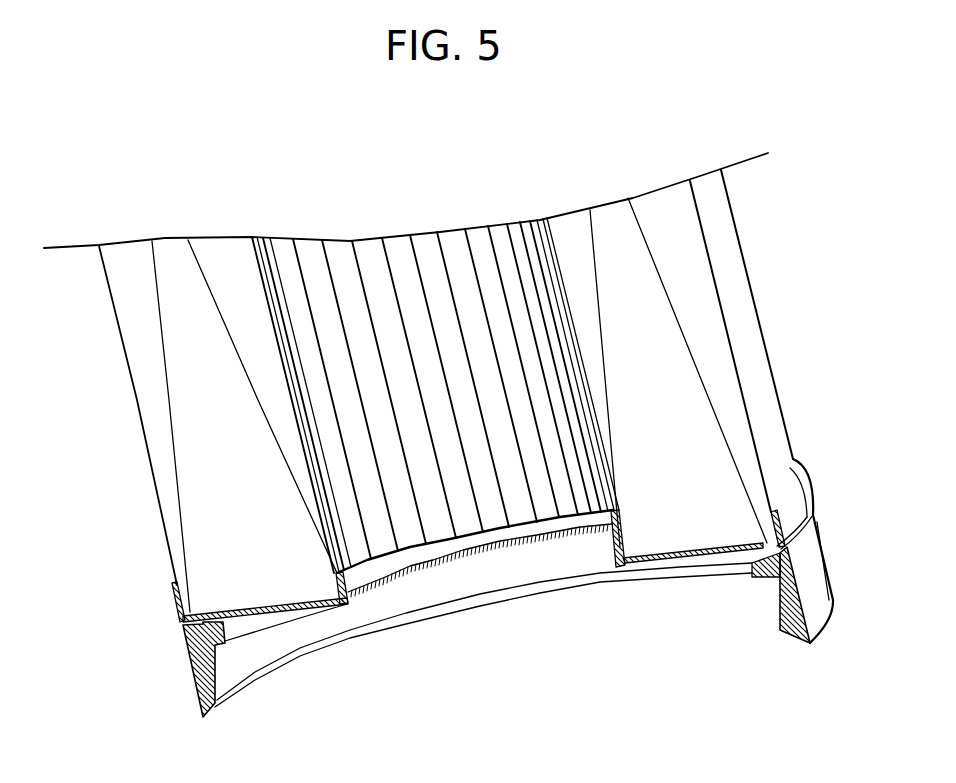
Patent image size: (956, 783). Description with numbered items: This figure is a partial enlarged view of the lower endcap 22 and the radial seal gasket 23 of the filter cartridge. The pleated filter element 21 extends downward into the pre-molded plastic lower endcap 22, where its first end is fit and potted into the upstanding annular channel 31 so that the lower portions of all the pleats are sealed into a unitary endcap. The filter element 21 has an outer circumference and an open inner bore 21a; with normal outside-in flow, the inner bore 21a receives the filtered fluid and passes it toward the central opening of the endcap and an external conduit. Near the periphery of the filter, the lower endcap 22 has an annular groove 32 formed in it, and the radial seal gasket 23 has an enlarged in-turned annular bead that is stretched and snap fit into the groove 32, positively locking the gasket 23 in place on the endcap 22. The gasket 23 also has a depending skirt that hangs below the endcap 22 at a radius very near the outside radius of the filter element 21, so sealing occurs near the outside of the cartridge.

The filter element 21 is at (706, 333).
The inner bore 21a is at (453, 490).
The lower endcap 22 is at (800, 500).
The radial seal gasket 23 is at (785, 625).
The upstanding annular channel 31 is at (248, 588).
The annular groove 32 is at (732, 572).